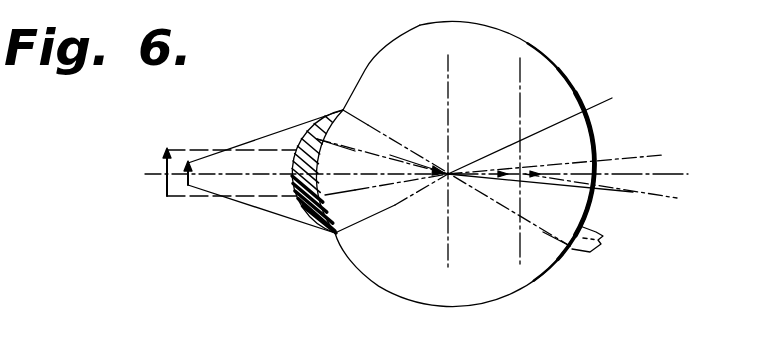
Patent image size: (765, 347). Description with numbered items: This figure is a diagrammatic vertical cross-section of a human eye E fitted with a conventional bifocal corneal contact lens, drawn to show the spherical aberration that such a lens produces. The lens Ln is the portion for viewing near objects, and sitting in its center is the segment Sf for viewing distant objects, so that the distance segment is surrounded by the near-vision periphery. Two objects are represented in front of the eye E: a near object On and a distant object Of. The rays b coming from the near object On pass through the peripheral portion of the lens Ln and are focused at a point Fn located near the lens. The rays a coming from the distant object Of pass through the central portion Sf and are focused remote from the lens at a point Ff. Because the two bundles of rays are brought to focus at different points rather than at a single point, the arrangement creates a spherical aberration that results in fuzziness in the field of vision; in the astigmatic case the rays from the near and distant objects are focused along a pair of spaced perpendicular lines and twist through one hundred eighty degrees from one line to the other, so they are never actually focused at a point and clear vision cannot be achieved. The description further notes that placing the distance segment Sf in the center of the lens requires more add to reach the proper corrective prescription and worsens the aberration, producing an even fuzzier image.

The eye E is at (355, 268).
The lens for viewing near objects Ln is at (300, 216).
The segment for viewing distant objects Sf is at (318, 182).
The distant object Of is at (167, 187).
The near object On is at (212, 176).
The rays from distant object a is at (182, 150).
The rays from near object b is at (247, 142).
The focal point near the lens Fn is at (452, 80).
The focal point remote from the lens Ff is at (520, 66).